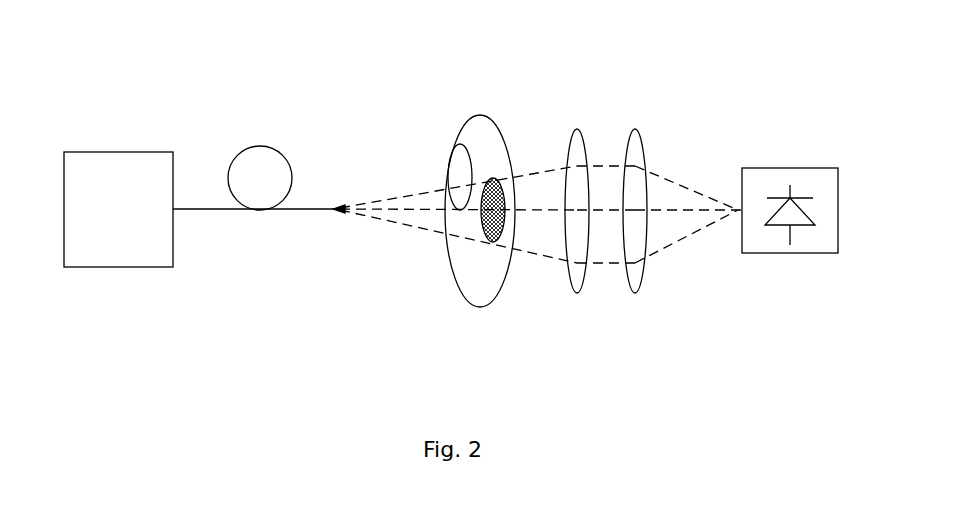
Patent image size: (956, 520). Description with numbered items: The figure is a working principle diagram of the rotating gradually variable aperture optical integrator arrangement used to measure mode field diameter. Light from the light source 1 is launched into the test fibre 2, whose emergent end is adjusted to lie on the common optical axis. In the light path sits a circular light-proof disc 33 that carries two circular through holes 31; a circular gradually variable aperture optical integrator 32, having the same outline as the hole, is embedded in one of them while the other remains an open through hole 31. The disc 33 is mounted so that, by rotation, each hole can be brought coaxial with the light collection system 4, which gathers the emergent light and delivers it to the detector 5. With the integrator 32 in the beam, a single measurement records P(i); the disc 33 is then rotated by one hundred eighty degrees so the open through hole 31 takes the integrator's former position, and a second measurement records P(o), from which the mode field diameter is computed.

The light source 1 is at (123, 245).
The test fibre 2 is at (255, 160).
The through hole 31 is at (463, 168).
The gradually variable aperture optical integrator 32 is at (493, 237).
The circular light-proof disc 33 is at (487, 135).
The light collection system 4 is at (582, 283).
The detector 5 is at (778, 255).